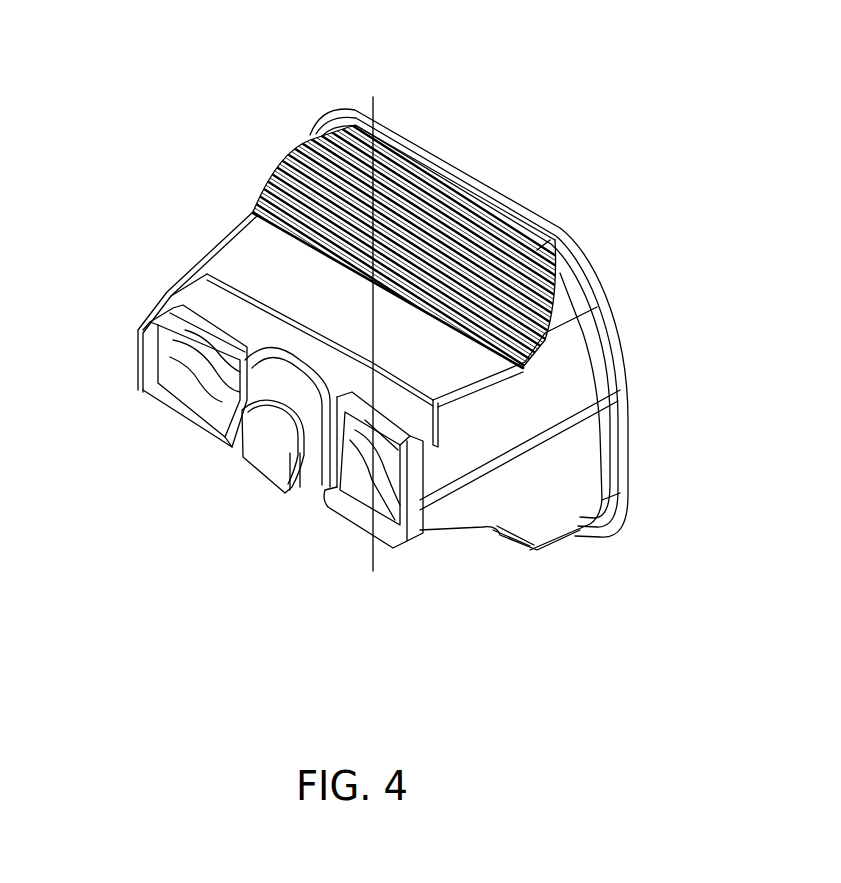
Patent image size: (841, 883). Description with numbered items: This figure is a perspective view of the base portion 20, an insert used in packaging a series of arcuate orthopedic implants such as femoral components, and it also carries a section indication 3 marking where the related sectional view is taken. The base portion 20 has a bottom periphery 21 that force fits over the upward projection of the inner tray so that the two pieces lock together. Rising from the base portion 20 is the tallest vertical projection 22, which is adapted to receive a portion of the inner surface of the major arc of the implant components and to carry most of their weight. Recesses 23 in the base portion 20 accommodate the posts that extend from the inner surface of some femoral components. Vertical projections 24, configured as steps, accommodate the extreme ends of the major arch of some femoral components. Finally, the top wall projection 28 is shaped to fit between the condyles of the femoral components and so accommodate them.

The base portion 20 is at (598, 88).
The bottom periphery 21 is at (400, 124).
The tallest vertical projection 22 is at (397, 530).
The recesses 23 is at (212, 377).
The vertical projections 24 is at (282, 158).
The top wall projection 28 is at (265, 444).
The section line 3 is at (372, 97).